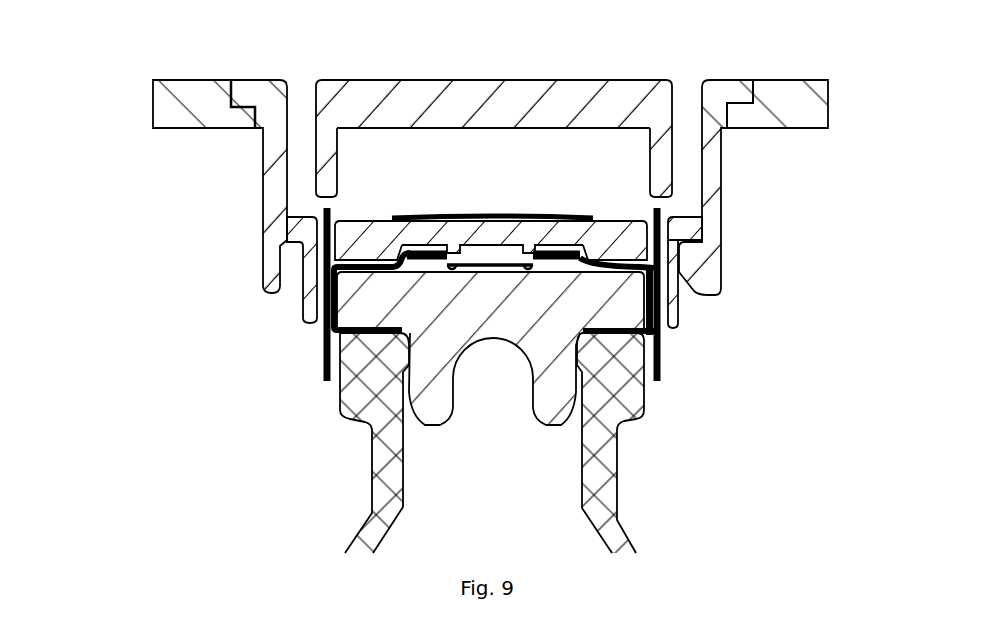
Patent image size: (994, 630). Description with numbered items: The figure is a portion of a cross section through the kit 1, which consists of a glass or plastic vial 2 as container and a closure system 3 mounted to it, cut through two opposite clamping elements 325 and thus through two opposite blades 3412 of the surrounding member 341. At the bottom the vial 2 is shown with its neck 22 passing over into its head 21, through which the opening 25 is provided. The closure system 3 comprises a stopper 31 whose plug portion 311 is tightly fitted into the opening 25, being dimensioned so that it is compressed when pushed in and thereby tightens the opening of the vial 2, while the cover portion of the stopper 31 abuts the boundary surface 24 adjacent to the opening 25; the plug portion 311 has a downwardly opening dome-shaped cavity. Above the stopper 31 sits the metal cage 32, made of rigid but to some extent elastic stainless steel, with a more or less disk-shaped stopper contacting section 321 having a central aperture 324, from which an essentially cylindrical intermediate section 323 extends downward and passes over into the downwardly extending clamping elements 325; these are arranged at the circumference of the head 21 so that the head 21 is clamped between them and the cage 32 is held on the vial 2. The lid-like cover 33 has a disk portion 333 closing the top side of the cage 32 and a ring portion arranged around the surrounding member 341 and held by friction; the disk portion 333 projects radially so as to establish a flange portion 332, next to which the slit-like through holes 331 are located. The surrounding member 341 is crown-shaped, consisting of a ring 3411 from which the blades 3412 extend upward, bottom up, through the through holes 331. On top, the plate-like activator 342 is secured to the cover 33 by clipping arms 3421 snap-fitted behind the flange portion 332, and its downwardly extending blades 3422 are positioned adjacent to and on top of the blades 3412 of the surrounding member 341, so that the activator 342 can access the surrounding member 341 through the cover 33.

The kit 1 is at (455, 412).
The vial 2 is at (459, 443).
The closure system 3 is at (319, 66).
The head 21 is at (340, 388).
The neck 22 is at (605, 490).
The boundary surface 24 is at (335, 332).
The opening 25 is at (503, 390).
The stopper 31 is at (585, 410).
The cage 32 is at (490, 196).
The cover 33 is at (569, 185).
The plug portion 311 is at (585, 313).
The stopper contacting section 321 is at (608, 257).
The intermediate section 323 is at (661, 318).
The central aperture 324 is at (483, 250).
The clamping elements 325 is at (330, 368).
The through holes 331 is at (662, 233).
The flange portion 332 is at (686, 229).
The disk portion 333 is at (503, 227).
The surrounding member 341 is at (268, 183).
The activator 342 is at (142, 76).
The ring 3411 is at (325, 265).
The blades 3412 is at (327, 208).
The clipping arms 3421 is at (783, 207).
The blades 3422 is at (327, 177).